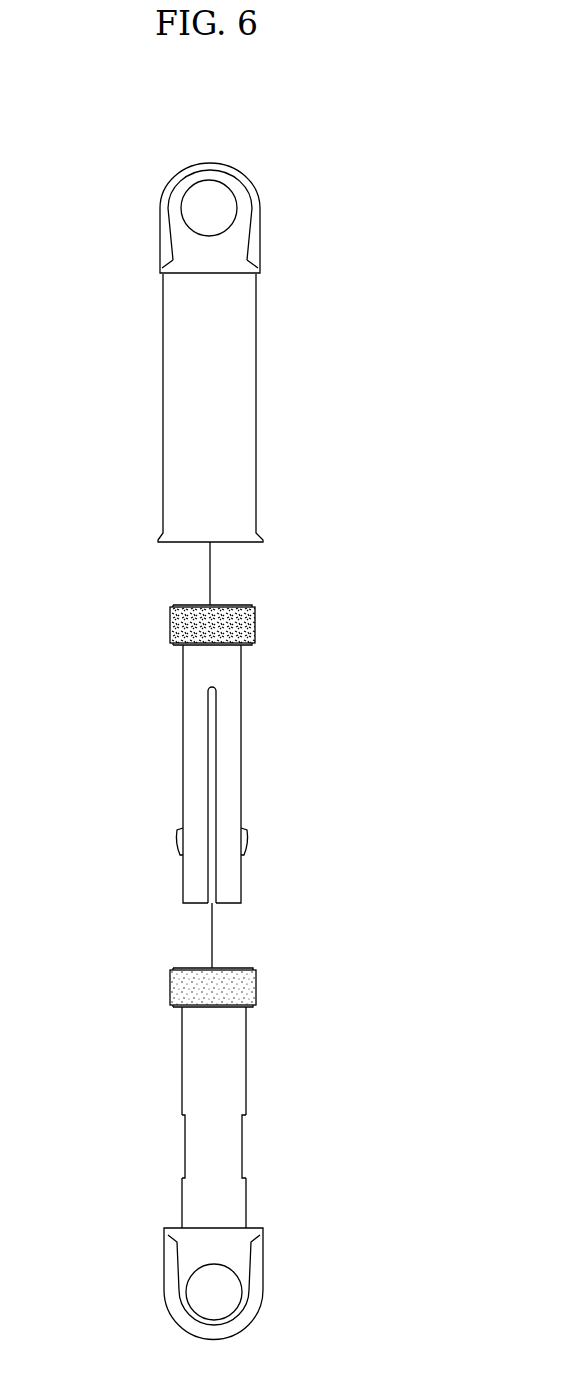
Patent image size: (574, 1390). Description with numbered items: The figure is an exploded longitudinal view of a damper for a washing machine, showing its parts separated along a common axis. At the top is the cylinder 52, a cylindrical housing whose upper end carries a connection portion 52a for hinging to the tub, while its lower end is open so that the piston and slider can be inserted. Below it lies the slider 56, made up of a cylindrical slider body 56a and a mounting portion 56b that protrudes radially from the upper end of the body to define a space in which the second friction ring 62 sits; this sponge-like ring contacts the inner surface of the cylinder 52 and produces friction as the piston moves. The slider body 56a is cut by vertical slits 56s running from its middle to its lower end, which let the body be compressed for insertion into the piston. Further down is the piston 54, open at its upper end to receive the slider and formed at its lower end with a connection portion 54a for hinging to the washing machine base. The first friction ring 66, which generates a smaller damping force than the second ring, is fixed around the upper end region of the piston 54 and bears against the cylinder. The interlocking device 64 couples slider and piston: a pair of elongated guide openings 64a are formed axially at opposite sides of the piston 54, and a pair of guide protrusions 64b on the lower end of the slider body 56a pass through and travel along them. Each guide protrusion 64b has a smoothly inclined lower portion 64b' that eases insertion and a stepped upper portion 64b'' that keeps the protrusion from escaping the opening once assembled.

The cylinder 52 is at (152, 345).
The connection portion 52a is at (238, 245).
The piston 54 is at (172, 1072).
The connection portion 54a is at (243, 1262).
The slider 56 is at (170, 703).
The slider body 56a is at (235, 705).
The mounting portion 56b is at (243, 605).
The vertical slits 56s is at (212, 885).
The second friction ring 62 is at (170, 624).
The interlocking device 64 is at (170, 838).
The guide openings 64a is at (242, 1145).
The guide protrusions 64b is at (296, 838).
The smoothly inclined lower portion 64b' is at (298, 860).
The stepped upper portion 64b'' is at (301, 817).
The first friction ring 66 is at (172, 987).